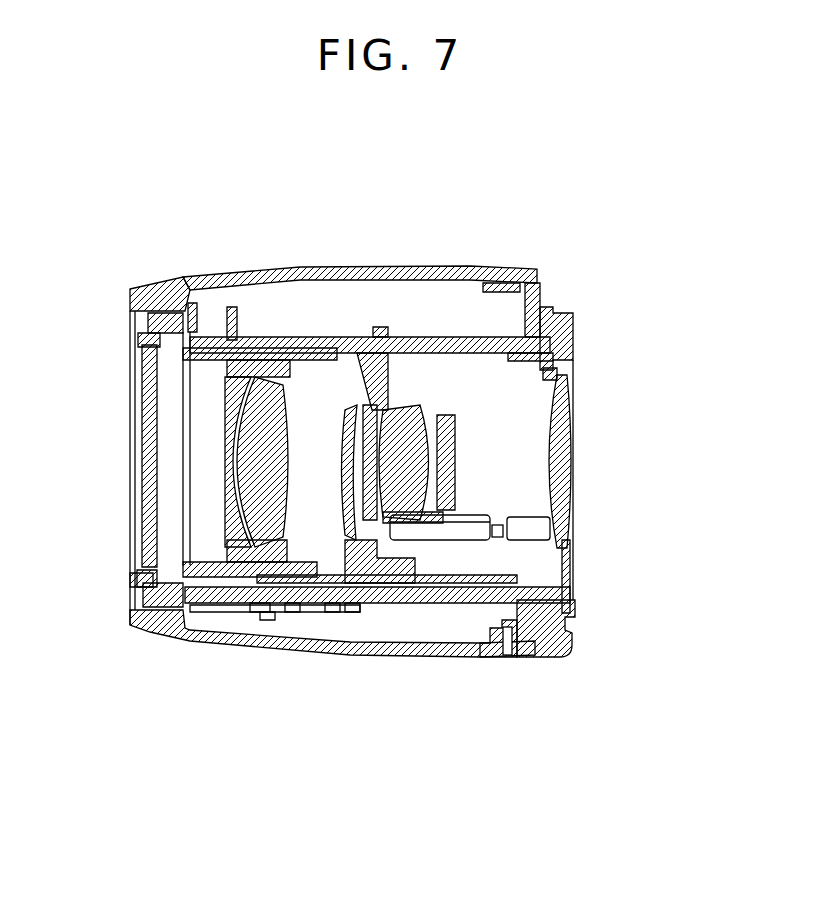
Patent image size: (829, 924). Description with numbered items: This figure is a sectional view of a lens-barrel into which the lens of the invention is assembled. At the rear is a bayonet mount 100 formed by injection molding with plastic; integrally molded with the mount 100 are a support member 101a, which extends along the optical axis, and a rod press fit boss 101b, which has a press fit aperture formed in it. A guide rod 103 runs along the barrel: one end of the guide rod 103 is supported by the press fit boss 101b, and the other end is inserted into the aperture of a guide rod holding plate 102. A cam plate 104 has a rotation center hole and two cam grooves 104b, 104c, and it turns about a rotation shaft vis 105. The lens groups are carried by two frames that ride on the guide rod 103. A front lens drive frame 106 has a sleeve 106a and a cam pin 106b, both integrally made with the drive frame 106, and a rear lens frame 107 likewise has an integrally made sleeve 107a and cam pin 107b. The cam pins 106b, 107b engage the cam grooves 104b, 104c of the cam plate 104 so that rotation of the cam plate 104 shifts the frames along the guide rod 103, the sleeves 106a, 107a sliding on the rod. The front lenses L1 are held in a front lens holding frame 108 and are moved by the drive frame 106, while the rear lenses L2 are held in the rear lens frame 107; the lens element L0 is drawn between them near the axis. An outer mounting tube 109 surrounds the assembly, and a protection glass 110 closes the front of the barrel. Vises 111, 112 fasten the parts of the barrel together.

The bayonet mount 100 is at (540, 284).
The support member 101a is at (263, 622).
The rod press fit boss 101b is at (573, 368).
The guide rod holding plate 102 is at (200, 300).
The guide rod 103 is at (437, 335).
The cam plate 104 is at (470, 605).
The cam groove 104b is at (258, 625).
The cam groove 104c is at (332, 645).
The rotation shaft vis 105 is at (405, 605).
The front lens drive frame 106 is at (217, 620).
The sleeve 106a is at (320, 358).
The cam pin 106b is at (290, 640).
The rear lens frame 107 is at (325, 612).
The sleeve 107a is at (475, 525).
The cam pin 107b is at (352, 652).
The front lens holding frame 108 is at (258, 336).
The outer mounting tube 109 is at (160, 283).
The protection glass 110 is at (148, 385).
The vis 111 is at (170, 640).
The vis 112 is at (508, 650).
The lens L0 is at (376, 455).
The front lenses L1 is at (232, 437).
The rear lenses L2 is at (343, 455).